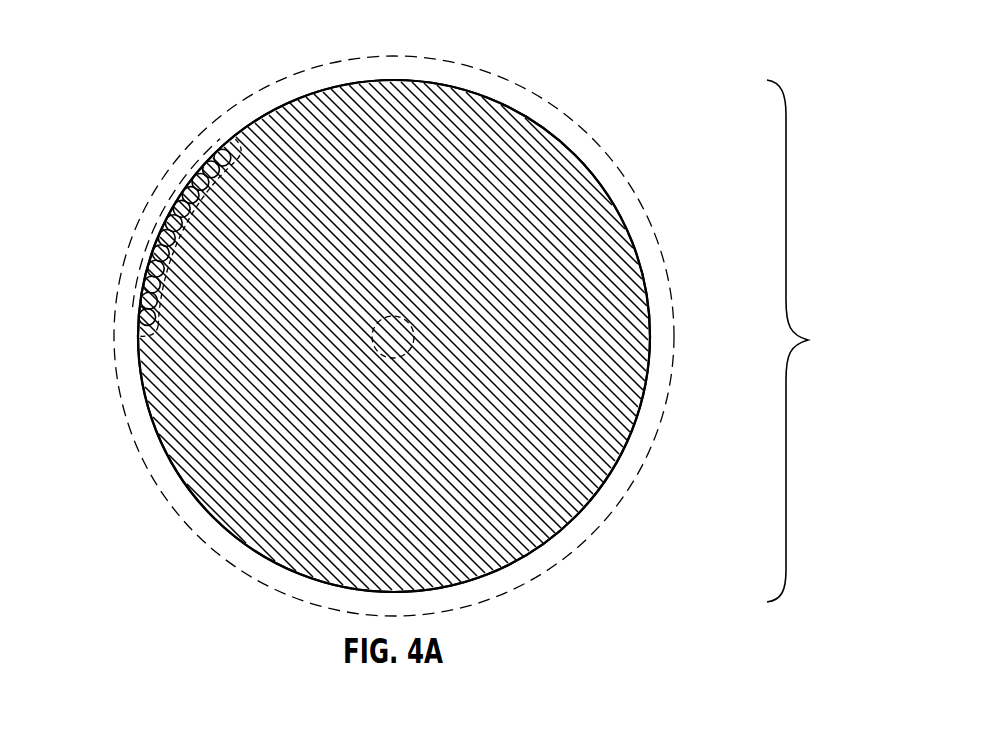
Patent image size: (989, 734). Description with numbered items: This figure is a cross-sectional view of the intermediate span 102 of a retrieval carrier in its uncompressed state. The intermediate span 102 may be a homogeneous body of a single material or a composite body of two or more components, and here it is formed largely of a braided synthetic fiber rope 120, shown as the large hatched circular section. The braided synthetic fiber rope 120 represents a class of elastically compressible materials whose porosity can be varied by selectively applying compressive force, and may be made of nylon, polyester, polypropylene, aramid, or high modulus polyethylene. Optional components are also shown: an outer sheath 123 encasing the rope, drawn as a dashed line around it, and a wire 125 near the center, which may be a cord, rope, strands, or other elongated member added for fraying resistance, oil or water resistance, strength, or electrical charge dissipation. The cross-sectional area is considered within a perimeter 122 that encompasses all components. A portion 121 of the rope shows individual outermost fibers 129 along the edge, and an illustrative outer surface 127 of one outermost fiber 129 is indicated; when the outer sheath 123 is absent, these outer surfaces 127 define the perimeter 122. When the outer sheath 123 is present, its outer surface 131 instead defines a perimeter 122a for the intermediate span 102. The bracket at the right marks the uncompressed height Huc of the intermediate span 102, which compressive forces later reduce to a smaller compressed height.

The intermediate span 102 is at (389, 311).
The braided synthetic fiber rope 120 is at (400, 74).
The portion of the braided synthetic fiber rope 121 is at (154, 207).
The perimeter 122 is at (565, 527).
The perimeter 122a is at (649, 462).
The outer sheath 123 is at (627, 171).
The wire 125 is at (410, 324).
The outer surface 127 is at (140, 363).
The outermost fibers 129 is at (130, 323).
The outer surface of the outer sheath 131 is at (569, 111).
The uncompressed height Huc is at (818, 341).